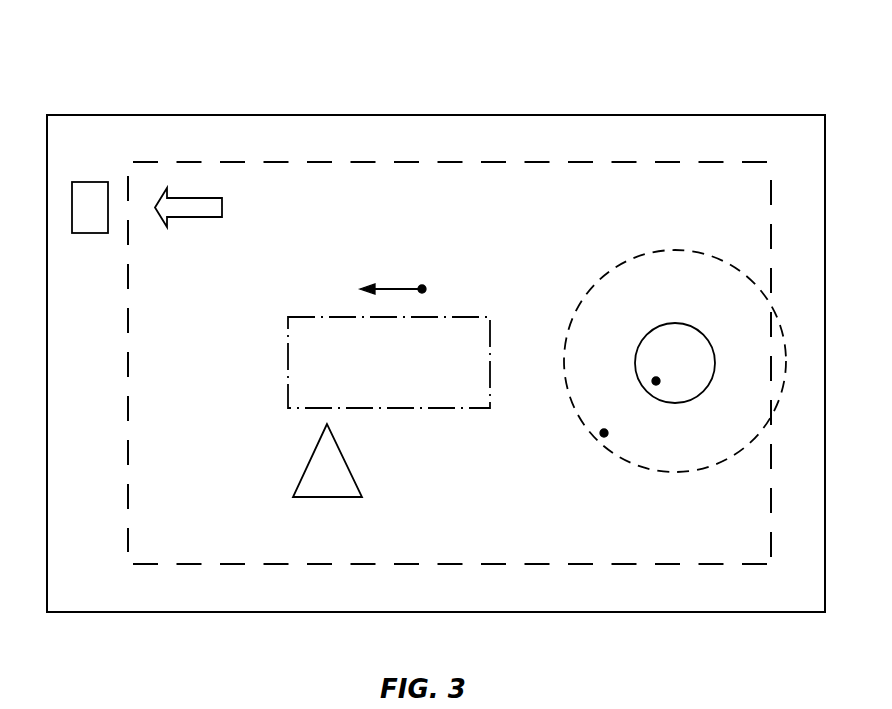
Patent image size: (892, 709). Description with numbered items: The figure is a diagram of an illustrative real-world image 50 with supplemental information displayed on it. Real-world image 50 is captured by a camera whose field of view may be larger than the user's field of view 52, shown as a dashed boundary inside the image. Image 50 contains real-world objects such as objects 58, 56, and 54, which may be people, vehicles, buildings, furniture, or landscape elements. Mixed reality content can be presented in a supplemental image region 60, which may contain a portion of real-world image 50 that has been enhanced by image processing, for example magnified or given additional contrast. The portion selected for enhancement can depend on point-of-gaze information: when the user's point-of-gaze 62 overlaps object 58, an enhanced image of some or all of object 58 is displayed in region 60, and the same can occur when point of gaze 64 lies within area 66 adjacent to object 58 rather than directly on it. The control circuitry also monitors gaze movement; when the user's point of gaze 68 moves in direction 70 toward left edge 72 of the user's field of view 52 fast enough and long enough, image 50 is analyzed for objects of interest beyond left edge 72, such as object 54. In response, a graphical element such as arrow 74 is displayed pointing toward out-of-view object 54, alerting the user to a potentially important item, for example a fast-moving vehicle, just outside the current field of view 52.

The real-world image 50 is at (675, 113).
The user's field of view 52 is at (495, 160).
The object 54 is at (90, 233).
The object 56 is at (352, 469).
The object 58 is at (680, 323).
The supplemental image region 60 is at (437, 410).
The point-of-gaze 62 is at (656, 387).
The point of gaze 64 is at (598, 437).
The area 66 is at (583, 297).
The point of gaze 68 is at (422, 284).
The direction 70 is at (385, 284).
The left edge 72 is at (126, 493).
The arrow 74 is at (200, 196).